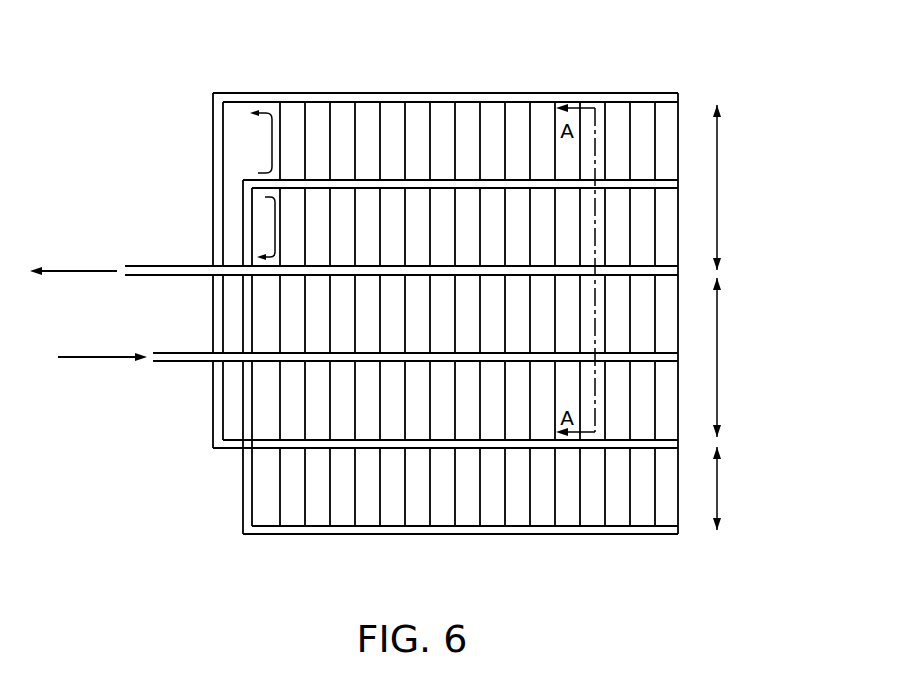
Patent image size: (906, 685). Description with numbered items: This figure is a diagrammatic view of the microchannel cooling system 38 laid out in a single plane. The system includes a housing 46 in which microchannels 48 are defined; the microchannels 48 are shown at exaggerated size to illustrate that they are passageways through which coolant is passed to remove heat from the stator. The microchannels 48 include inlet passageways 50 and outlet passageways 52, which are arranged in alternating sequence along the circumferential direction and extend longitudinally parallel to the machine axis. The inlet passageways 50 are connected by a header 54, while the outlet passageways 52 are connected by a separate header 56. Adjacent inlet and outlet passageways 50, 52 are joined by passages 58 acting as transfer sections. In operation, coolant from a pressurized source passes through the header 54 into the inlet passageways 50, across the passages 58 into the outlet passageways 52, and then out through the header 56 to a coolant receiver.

The microchannel cooling system 38 is at (749, 100).
The housing 46 is at (690, 549).
The microchannels 48 is at (244, 170).
The inlet passageways 50 is at (662, 180).
The outlet passageways 52 is at (638, 94).
The header 54 is at (242, 333).
The header 56 is at (213, 210).
The passages 58 is at (329, 135).